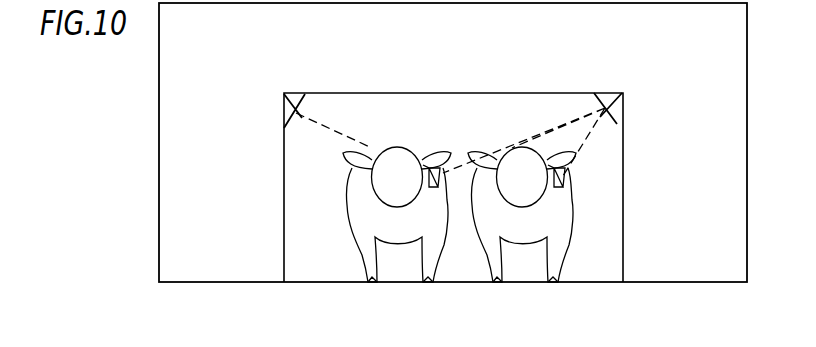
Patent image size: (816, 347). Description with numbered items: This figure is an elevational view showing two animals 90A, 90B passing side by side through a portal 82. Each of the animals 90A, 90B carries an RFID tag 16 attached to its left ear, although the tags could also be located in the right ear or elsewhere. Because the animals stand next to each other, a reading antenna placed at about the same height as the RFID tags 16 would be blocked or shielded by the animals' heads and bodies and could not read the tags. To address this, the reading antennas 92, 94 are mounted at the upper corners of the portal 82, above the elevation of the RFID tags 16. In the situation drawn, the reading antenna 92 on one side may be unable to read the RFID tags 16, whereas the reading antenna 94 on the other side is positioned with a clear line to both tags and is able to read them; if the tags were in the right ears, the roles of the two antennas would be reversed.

The portal 82 is at (605, 260).
The reading antenna 92 is at (288, 97).
The reading antenna 94 is at (607, 93).
The animal 90A is at (372, 283).
The animal 90B is at (548, 283).
The RFID tag 16 is at (431, 167).